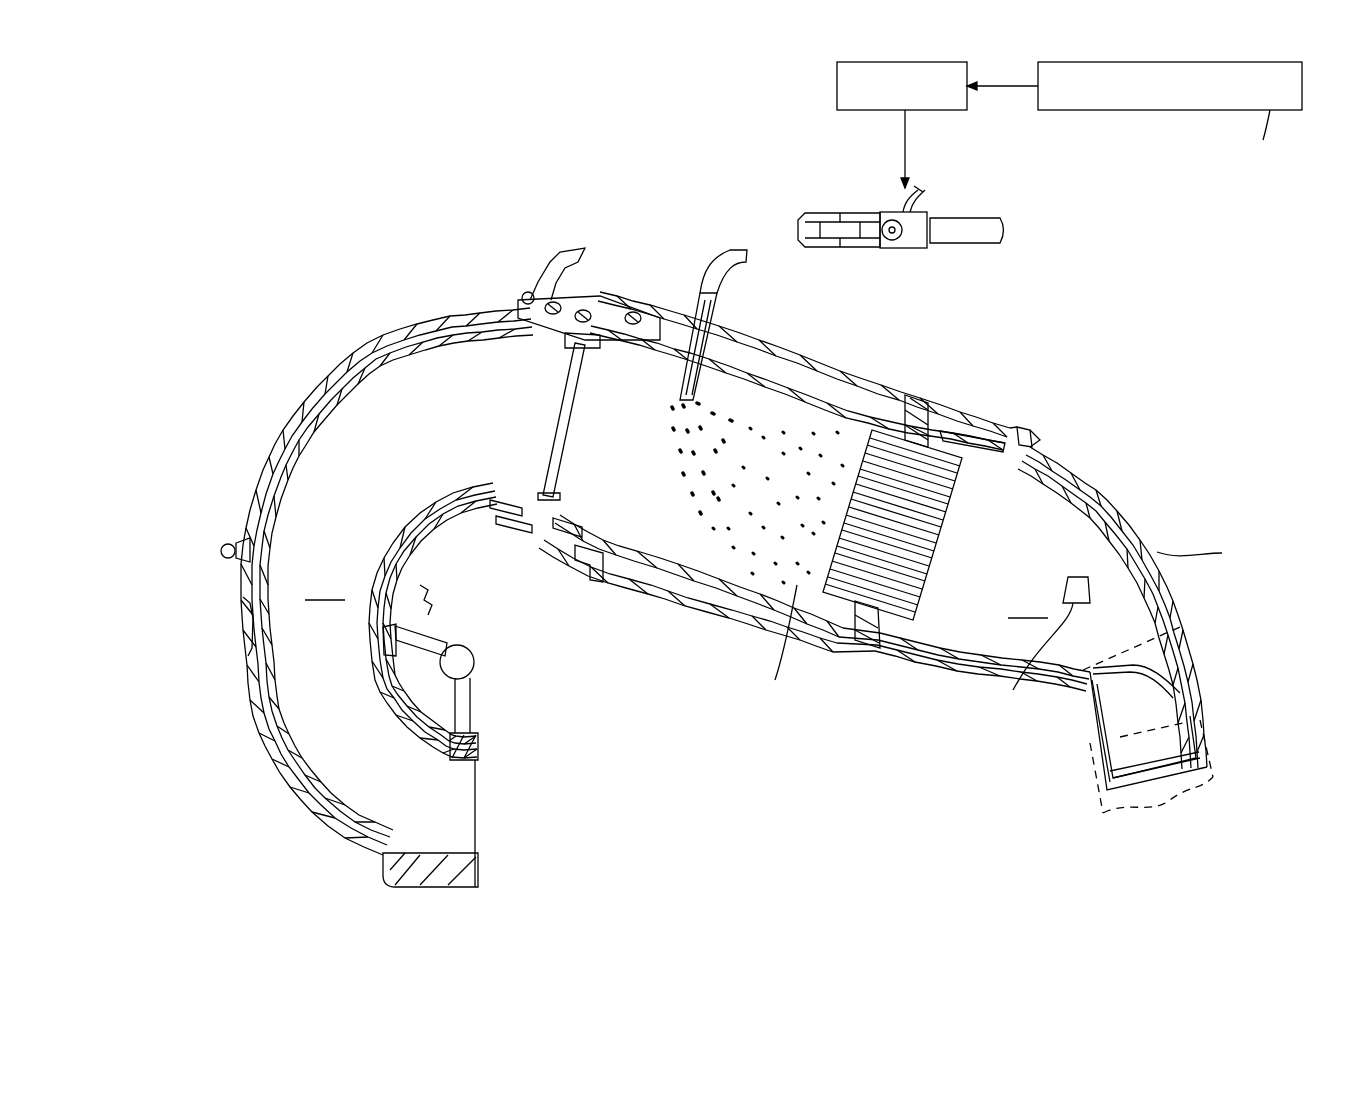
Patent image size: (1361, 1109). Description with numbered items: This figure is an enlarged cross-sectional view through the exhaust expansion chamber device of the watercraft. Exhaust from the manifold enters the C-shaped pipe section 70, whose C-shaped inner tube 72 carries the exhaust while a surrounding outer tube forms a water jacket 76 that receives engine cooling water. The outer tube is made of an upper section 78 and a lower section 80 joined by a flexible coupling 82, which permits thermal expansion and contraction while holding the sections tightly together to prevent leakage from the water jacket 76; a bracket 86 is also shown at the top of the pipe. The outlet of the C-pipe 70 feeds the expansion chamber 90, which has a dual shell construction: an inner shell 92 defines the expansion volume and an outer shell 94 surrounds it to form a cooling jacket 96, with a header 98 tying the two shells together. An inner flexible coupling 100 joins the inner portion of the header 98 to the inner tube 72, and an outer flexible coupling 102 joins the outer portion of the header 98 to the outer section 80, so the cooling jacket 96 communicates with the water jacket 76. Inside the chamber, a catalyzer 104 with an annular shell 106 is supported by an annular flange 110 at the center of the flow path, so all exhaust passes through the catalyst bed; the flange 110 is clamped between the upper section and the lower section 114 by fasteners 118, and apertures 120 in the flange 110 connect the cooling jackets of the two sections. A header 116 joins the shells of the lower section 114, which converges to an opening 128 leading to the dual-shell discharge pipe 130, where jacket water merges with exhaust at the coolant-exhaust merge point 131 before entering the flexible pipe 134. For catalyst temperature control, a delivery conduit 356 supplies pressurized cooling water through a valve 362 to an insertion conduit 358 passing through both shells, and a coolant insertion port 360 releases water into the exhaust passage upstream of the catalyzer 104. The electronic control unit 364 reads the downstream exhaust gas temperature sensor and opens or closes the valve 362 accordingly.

The C-shaped pipe section 70 is at (240, 654).
The C-shaped inner tube 72 is at (320, 410).
The water jacket 76 is at (415, 343).
The upper section 78 is at (242, 620).
The lower section 80 is at (252, 500).
The flexible coupling 82 is at (440, 632).
The bracket 86 is at (548, 250).
The expansion chamber 90 is at (840, 499).
The inner shell 92 is at (1060, 470).
The outer shell 94 is at (1097, 490).
The cooling jacket 96 is at (803, 337).
The header 98 is at (592, 580).
The inner flexible coupling 100 is at (522, 523).
The outer flexible coupling 102 is at (566, 522).
The catalyzer 104 is at (960, 507).
The annular shell 106 is at (950, 440).
The annular flange 110 is at (900, 395).
The lower section 114 is at (899, 586).
The header 116 is at (945, 400).
The fasteners 118 is at (1033, 430).
The apertures 120 is at (857, 640).
The opening 128 is at (1183, 700).
The discharge pipe 130 is at (1106, 767).
The coolant-exhaust merge point 131 is at (1148, 778).
The flexible pipe 134 is at (1217, 775).
The delivery conduit 356 is at (720, 247).
The insertion conduit 358 is at (860, 289).
The coolant insertion port 360 is at (670, 385).
The valve 362 is at (892, 250).
The electronic control unit 364 is at (943, 110).